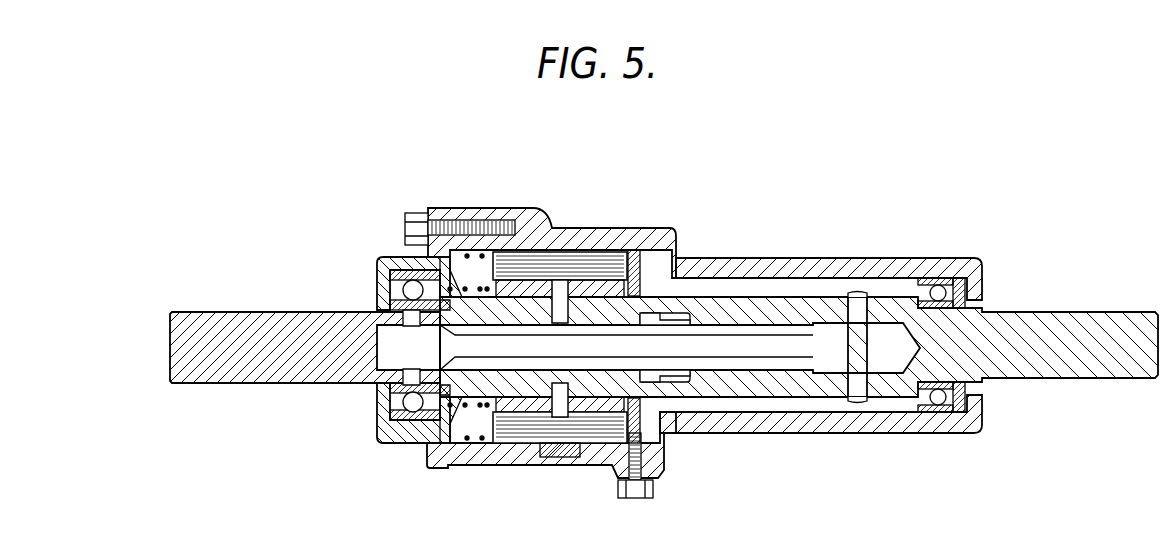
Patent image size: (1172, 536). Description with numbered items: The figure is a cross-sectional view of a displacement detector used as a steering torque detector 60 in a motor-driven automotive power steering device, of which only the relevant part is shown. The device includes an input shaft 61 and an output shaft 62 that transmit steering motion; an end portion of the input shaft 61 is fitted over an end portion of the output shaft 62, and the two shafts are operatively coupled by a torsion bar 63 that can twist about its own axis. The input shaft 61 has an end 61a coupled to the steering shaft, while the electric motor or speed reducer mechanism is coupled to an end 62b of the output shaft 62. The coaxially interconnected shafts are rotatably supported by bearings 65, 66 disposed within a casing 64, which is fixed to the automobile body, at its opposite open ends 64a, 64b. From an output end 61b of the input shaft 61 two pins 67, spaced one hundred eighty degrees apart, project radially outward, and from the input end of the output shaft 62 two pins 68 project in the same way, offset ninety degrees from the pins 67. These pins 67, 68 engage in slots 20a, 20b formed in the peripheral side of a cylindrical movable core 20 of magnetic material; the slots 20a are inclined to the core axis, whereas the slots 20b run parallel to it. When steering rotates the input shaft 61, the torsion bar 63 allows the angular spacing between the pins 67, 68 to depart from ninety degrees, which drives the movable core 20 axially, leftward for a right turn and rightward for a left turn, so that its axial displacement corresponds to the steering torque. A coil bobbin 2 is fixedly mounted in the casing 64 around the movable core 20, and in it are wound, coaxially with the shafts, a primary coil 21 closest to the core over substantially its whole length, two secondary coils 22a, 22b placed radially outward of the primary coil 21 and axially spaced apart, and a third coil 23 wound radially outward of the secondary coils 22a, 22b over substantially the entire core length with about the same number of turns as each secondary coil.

The steering torque detector 60 is at (664, 158).
The coil bobbin 2 is at (478, 256).
The movable core 20 is at (678, 263).
The slots 20a is at (545, 446).
The slots 20b is at (607, 252).
The primary coil 21 is at (478, 431).
The secondary coil 22a is at (633, 413).
The secondary coil 22b is at (510, 441).
The third coil 23 is at (558, 433).
The input shaft 61 is at (1052, 364).
The end of input shaft 61a is at (1118, 368).
The output end of input shaft 61b is at (677, 391).
The output shaft 62 is at (242, 366).
The end of output shaft 62b is at (230, 332).
The torsion bar 63 is at (753, 342).
The casing 64 is at (528, 222).
The open end of casing 64a is at (977, 300).
The open end of casing 64b is at (380, 397).
The bearing 65 is at (936, 284).
The bearing 66 is at (405, 258).
The pins 67 is at (576, 446).
The pins 68 is at (578, 256).